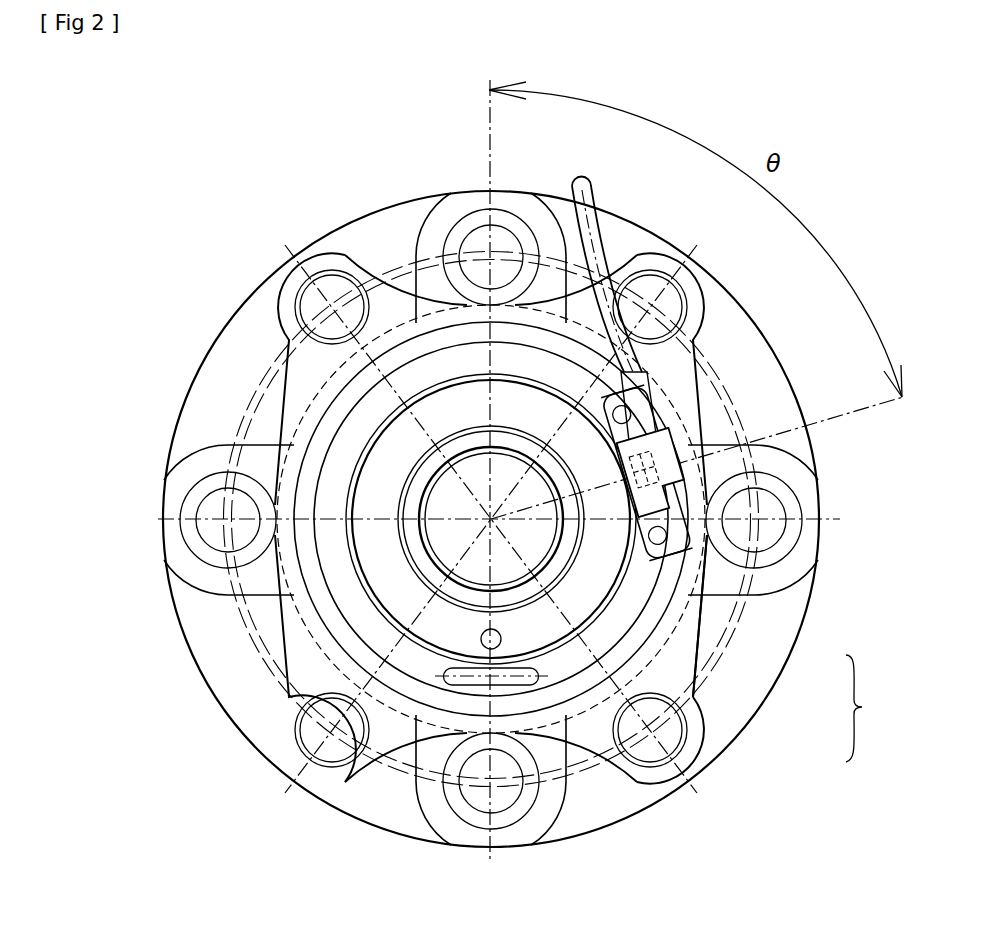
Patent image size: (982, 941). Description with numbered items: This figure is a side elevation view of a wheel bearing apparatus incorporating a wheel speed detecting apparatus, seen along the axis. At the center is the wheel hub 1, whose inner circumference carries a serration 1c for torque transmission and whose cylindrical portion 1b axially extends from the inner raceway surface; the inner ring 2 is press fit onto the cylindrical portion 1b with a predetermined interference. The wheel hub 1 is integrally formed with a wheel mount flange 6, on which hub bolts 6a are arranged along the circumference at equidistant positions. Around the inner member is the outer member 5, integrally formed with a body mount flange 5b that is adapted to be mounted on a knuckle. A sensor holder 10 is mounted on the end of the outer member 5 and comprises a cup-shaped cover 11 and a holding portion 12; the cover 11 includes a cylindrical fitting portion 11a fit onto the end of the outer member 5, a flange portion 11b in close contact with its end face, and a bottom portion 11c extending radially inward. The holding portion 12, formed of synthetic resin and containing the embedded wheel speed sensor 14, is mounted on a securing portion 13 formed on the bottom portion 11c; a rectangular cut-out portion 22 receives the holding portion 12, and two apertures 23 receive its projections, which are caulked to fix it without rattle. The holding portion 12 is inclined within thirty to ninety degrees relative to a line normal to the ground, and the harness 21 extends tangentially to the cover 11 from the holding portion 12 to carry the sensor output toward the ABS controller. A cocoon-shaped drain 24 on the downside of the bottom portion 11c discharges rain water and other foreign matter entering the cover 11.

The wheel hub 1 is at (236, 356).
The cylindrical portion 1b is at (397, 548).
The serration 1c is at (508, 560).
The inner ring 2 is at (345, 450).
The outer member 5 is at (717, 363).
The body mount flange 5b is at (697, 302).
The wheel mount flange 6 is at (399, 243).
The hub bolts 6a is at (493, 242).
The sensor holder 10 is at (690, 476).
The cover 11 is at (874, 708).
The cylindrical fitting portion 11a is at (703, 727).
The flange portion 11b is at (696, 684).
The bottom portion 11c is at (698, 652).
The holding portion 12 is at (668, 537).
The securing portion 13 is at (627, 643).
The wheel speed sensor 14 is at (642, 489).
The harness 21 is at (607, 217).
The cut-out portion 22 is at (618, 445).
The apertures 23 is at (630, 404).
The drain 24 is at (460, 683).